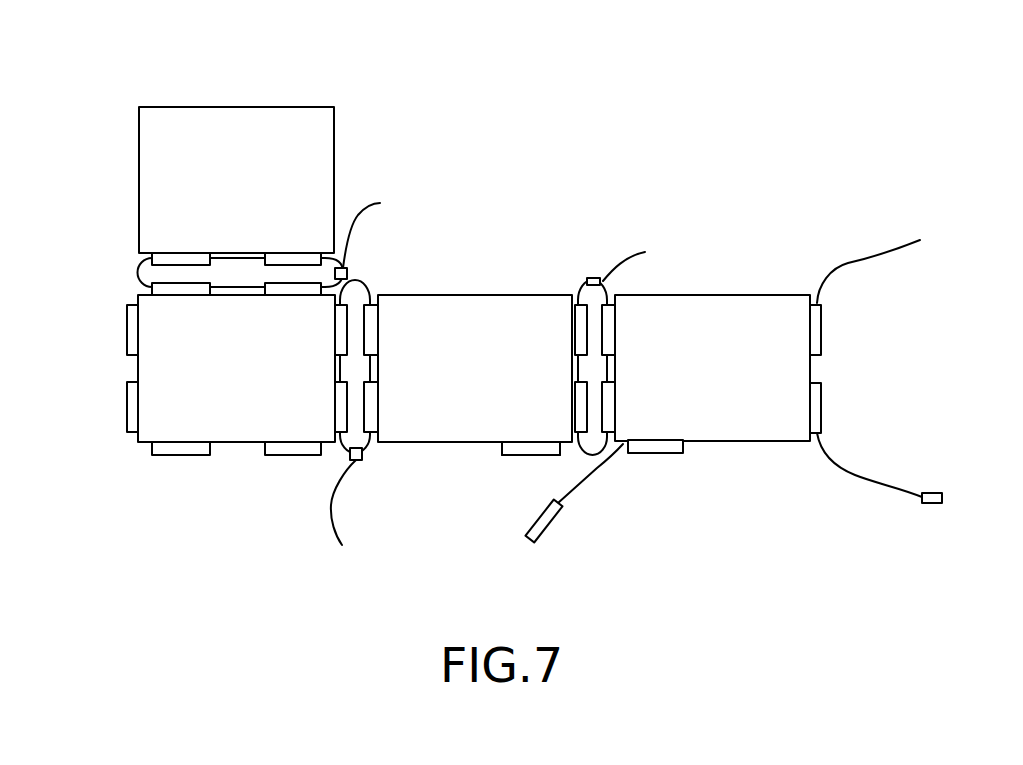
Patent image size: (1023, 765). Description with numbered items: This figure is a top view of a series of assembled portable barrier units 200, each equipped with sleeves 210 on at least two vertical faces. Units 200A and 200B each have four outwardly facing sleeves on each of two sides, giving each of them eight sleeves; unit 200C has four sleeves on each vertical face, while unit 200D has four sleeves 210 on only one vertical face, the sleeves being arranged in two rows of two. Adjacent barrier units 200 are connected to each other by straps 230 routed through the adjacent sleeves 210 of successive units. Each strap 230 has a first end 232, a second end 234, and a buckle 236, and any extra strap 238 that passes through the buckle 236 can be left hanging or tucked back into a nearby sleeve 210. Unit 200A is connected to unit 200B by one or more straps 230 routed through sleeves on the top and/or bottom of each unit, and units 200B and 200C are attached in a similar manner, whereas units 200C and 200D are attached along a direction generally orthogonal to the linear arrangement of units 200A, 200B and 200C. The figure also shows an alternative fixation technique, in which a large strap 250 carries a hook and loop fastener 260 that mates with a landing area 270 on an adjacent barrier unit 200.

The portable barrier unit 200 is at (474, 315).
The barrier unit 200A is at (740, 383).
The barrier unit 200B is at (503, 383).
The barrier unit 200C is at (265, 383).
The barrier unit 200D is at (265, 194).
The sleeve 210 is at (127, 325).
The strap 230 is at (128, 272).
The first end 232 is at (912, 240).
The second end 234 is at (935, 493).
The buckle 236 is at (593, 279).
The extra strap 238 is at (376, 206).
The large strap 250 is at (563, 505).
The hook and loop fastener 260 is at (532, 524).
The landing area 270 is at (532, 455).